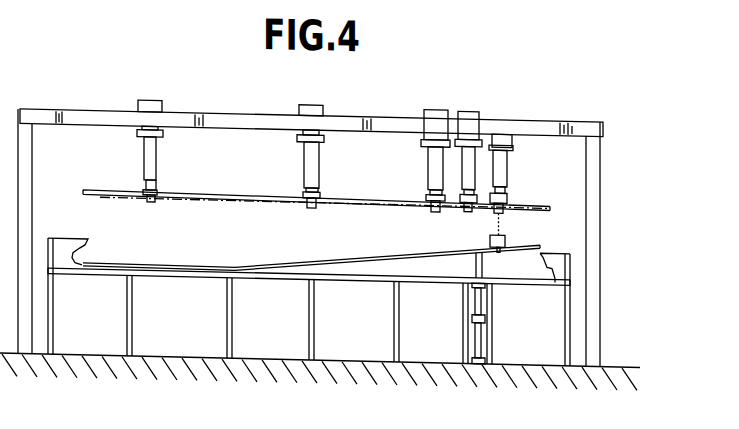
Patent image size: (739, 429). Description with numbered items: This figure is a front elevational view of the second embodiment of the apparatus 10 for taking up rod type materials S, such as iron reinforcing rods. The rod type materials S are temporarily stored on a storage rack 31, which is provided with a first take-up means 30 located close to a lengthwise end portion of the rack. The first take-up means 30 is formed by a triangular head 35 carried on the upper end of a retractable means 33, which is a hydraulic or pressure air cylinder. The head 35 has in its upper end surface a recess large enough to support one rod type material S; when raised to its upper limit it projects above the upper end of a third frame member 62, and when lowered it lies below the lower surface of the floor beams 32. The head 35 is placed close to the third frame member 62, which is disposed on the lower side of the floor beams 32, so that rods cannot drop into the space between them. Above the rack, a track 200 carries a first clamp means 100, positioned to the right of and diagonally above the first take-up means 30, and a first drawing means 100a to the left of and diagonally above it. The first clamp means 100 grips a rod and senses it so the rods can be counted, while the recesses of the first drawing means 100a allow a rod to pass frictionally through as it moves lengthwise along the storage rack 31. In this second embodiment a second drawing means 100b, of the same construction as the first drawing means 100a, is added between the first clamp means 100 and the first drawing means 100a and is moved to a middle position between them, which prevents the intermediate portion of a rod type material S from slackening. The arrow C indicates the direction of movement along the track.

The apparatus for taking up rod type materials 10 is at (321, 204).
The track 200 is at (505, 108).
The first clamp means 100 is at (507, 163).
The first drawing means 100a is at (145, 157).
The second drawing means 100b is at (302, 162).
The first take-up means 30 is at (354, 296).
The storage rack 31 is at (560, 229).
The floor beams 32 is at (350, 273).
The retractable means 33 is at (487, 331).
The triangular head 35 is at (480, 251).
The third frame member 62 is at (558, 239).
The rod type materials S is at (188, 198).
The conveying direction C is at (413, 156).